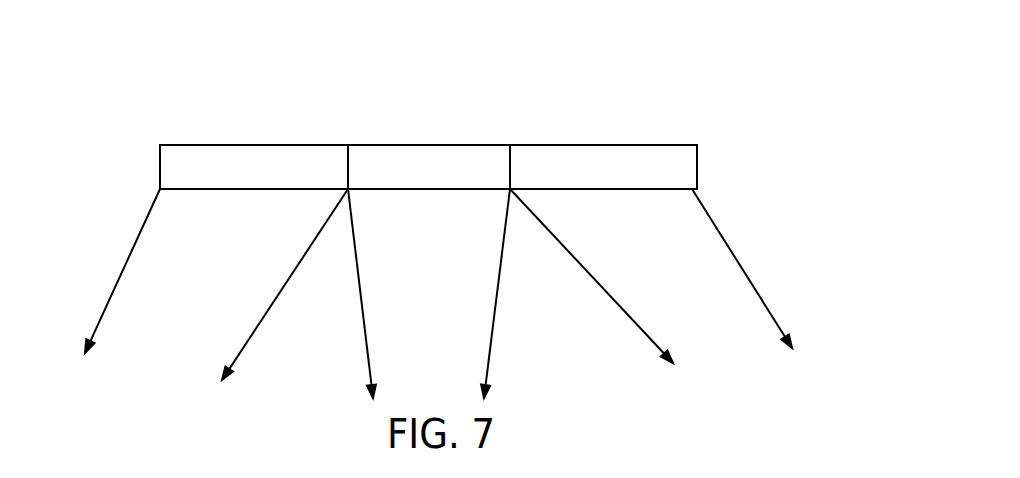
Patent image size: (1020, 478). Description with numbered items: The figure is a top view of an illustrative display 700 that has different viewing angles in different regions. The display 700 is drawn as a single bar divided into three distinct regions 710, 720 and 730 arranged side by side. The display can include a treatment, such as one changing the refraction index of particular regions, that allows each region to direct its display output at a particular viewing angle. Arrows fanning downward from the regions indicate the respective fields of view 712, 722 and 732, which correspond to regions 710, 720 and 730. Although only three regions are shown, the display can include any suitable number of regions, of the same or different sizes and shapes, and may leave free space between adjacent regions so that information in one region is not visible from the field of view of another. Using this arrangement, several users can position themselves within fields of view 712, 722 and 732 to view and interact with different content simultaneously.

The display 700 is at (327, 92).
The region 710 is at (231, 156).
The region 720 is at (421, 157).
The region 730 is at (617, 153).
The field of view 712 is at (148, 255).
The field of view 722 is at (455, 318).
The field of view 732 is at (705, 263).